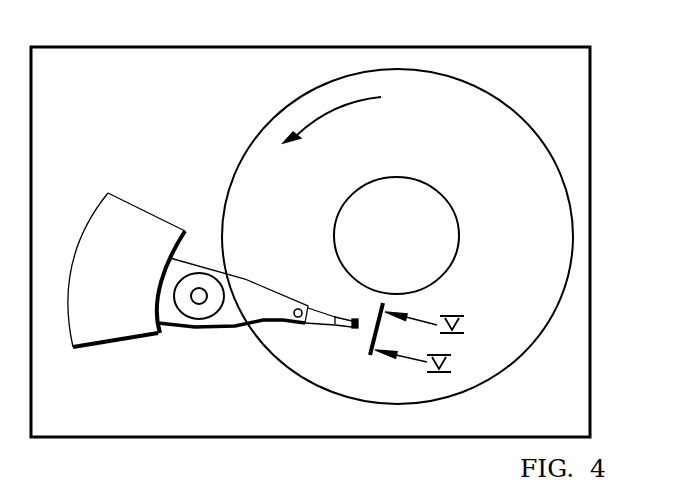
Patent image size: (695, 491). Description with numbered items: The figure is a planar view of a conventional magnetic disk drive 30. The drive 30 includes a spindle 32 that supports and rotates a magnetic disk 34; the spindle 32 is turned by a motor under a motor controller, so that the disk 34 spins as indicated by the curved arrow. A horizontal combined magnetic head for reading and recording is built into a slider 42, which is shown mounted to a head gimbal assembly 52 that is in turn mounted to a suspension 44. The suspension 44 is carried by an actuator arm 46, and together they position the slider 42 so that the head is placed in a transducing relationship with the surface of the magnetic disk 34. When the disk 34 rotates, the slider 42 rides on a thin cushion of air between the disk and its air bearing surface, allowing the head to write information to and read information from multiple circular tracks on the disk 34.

The magnetic disk drive 30 is at (600, 53).
The spindle 32 is at (418, 178).
The magnetic disk 34 is at (512, 236).
The slider 42 is at (358, 328).
The suspension 44 is at (316, 327).
The actuator arm 46 is at (242, 278).
The head gimbal assembly 52 is at (348, 315).